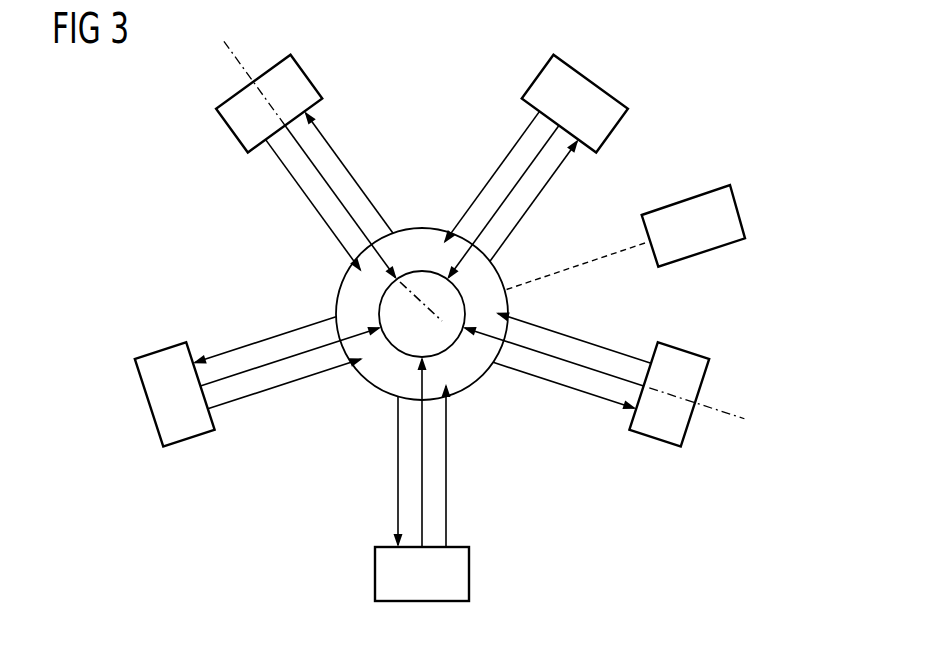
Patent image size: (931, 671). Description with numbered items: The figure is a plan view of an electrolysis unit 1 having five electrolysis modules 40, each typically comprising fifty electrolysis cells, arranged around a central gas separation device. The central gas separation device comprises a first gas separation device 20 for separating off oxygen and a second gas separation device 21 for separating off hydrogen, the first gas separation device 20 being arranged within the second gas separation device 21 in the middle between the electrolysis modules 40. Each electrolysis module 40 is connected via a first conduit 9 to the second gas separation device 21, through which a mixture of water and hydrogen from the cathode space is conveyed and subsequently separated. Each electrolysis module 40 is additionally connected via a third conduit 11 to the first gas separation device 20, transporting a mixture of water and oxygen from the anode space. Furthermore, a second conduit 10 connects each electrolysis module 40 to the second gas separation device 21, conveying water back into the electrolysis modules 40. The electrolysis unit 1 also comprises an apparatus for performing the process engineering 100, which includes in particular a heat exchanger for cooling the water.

The electrolysis unit 1 is at (692, 76).
The first conduit 9 is at (280, 163).
The second conduit 10 is at (328, 130).
The third conduit 11 is at (327, 180).
The first gas separation device 20 is at (440, 342).
The second gas separation device 21 is at (390, 382).
The electrolysis module 40 is at (223, 102).
The process engineering 100 is at (738, 212).